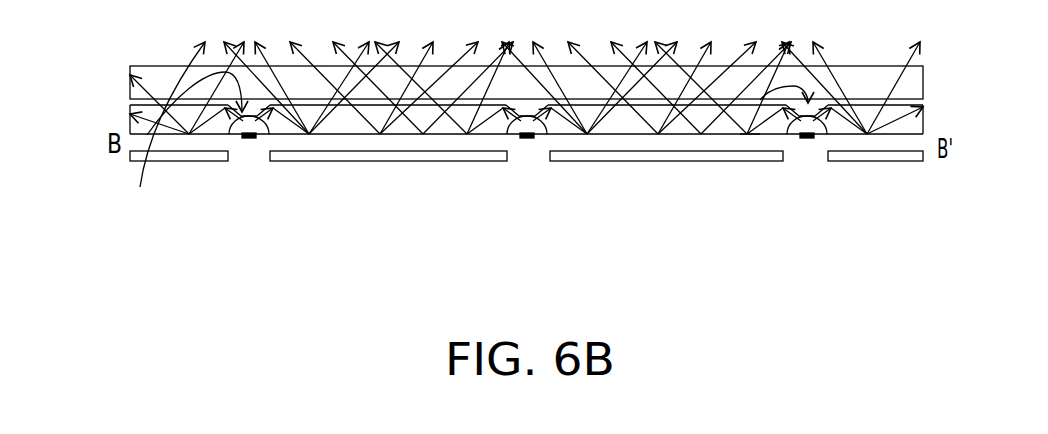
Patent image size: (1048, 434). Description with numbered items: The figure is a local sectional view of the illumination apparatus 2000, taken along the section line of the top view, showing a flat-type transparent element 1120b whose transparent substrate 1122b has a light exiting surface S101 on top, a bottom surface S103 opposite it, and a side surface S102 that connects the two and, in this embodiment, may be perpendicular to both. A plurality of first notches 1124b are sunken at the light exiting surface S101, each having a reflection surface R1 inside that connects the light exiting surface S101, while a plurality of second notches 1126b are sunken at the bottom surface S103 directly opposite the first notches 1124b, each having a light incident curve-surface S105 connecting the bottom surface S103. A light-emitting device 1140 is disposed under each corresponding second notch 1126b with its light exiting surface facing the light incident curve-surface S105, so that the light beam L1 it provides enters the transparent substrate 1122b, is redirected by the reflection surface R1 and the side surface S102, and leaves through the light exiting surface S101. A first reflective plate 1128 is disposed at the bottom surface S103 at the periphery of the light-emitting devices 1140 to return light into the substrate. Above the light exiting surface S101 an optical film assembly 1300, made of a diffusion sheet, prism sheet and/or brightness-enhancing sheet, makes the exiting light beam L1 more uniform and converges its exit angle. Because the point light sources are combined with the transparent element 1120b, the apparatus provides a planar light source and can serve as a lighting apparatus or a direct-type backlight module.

The illumination apparatus 2000 is at (537, 157).
The optical film assembly 1300 is at (157, 76).
The light-emitting device 1140 is at (569, 136).
The first reflective plate 1128 is at (623, 161).
The transparent element 1120b is at (570, 200).
The transparent substrate 1122b is at (845, 126).
The first notch 1124b is at (723, 179).
The second notch 1126b is at (796, 138).
The light exiting surface S101 is at (413, 102).
The side surface S102 is at (928, 120).
The bottom surface S103 is at (433, 137).
The light incident curve-surface S105 is at (268, 136).
The reflection surface R1 is at (164, 129).
The light beam L1 is at (239, 137).